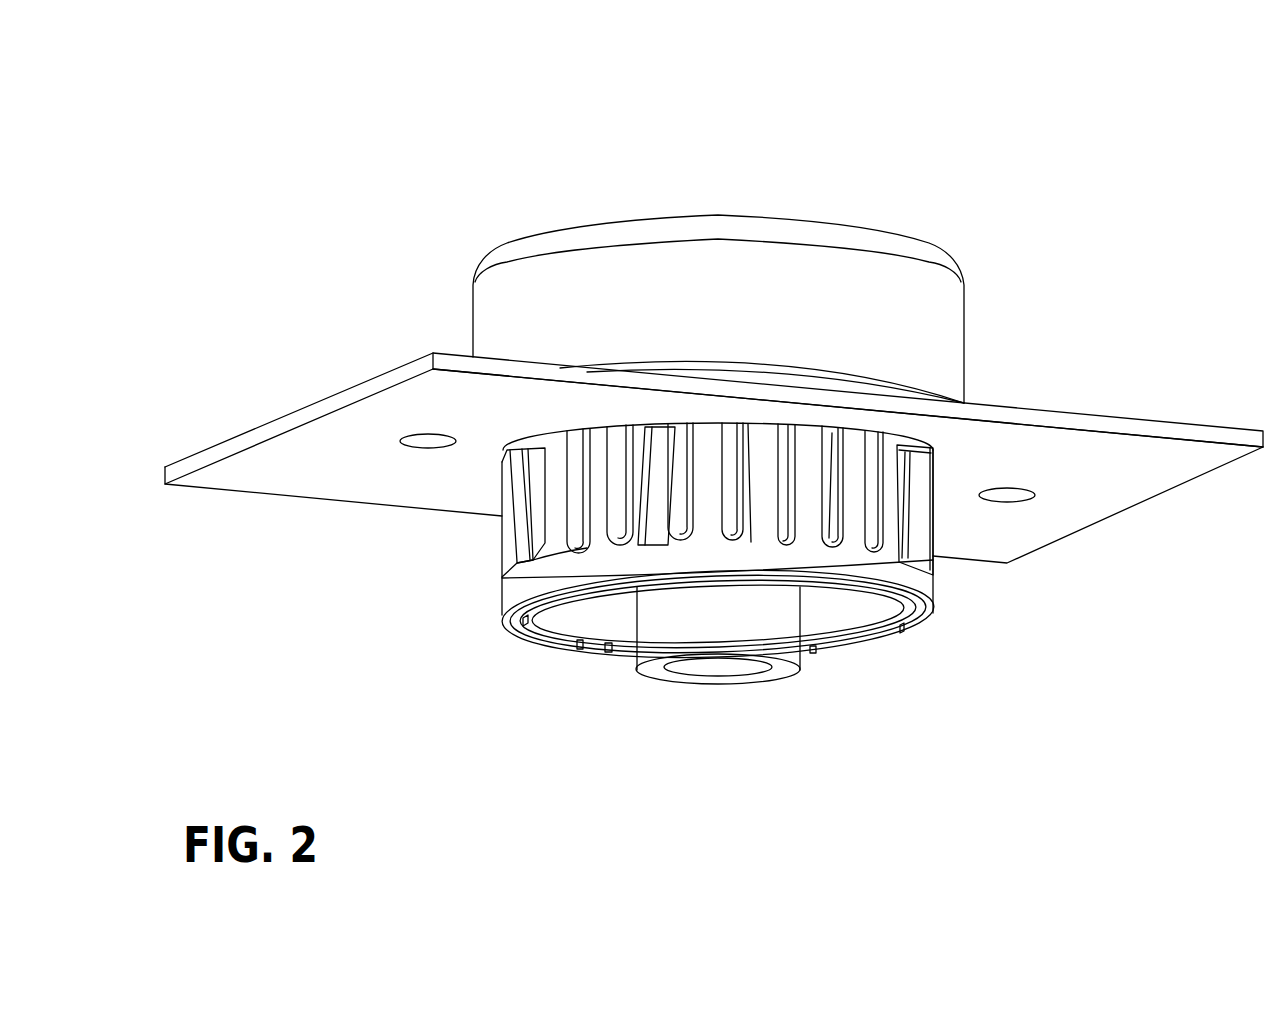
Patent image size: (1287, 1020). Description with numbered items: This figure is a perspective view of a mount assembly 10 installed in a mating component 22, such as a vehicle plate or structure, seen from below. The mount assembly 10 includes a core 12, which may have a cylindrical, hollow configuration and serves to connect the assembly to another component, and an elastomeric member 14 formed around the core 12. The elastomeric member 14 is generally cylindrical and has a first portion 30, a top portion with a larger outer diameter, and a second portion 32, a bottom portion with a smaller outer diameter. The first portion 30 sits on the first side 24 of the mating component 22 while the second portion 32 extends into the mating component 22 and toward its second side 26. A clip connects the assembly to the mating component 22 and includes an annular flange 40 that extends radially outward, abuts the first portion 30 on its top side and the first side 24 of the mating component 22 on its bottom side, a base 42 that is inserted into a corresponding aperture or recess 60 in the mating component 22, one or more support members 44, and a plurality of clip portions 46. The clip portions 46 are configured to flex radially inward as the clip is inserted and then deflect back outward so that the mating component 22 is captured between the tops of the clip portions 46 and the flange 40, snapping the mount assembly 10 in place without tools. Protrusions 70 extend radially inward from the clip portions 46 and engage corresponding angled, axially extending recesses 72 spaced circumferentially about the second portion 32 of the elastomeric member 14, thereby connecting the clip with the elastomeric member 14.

The mount assembly 10 is at (968, 165).
The core 12 is at (710, 670).
The elastomeric member 14 is at (460, 278).
The mounting plate 22 is at (1137, 430).
The first side 24 is at (313, 400).
The second side 26 is at (297, 465).
The first portion 30 is at (920, 310).
The second portion 32 is at (845, 608).
The flange 40 is at (756, 384).
The base 42 is at (913, 583).
The support members 44 is at (592, 551).
The clip portions 46 is at (502, 485).
The aperture or recess 60 is at (898, 447).
The protrusions 70 is at (580, 657).
The recesses 72 is at (603, 625).